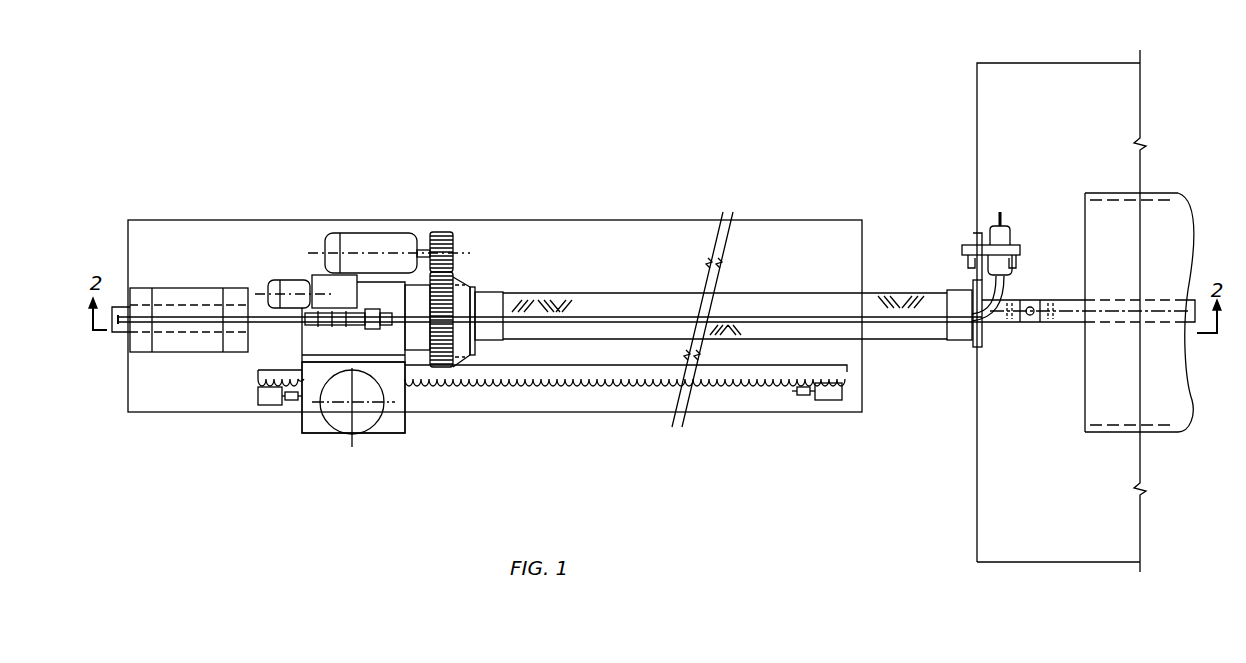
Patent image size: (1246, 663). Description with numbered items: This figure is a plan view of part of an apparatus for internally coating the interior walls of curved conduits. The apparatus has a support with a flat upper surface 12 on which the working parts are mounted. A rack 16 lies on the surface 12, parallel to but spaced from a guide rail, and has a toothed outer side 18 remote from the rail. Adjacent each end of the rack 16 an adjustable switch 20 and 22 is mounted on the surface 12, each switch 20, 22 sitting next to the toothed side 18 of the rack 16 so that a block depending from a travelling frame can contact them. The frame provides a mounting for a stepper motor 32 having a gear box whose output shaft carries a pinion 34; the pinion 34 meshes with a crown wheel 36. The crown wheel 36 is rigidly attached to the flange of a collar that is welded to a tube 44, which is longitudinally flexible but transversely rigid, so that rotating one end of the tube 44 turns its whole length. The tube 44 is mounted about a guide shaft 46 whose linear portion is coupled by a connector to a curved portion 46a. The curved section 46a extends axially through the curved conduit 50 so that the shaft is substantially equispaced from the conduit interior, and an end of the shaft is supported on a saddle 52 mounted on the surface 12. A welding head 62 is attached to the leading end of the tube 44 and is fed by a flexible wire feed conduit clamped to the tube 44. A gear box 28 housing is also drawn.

The flat upper surface 12 is at (627, 238).
The rack 16 is at (725, 373).
The toothed outer side 18 is at (552, 381).
The adjustable switch 20 is at (270, 405).
The adjustable switch 22 is at (828, 400).
The gear box 28 is at (390, 425).
The stepper motor 32 is at (355, 243).
The pinion 34 is at (432, 230).
The crown wheel 36 is at (447, 282).
The tube 44 is at (905, 292).
The guide shaft 46 is at (1005, 323).
The curved portion 46a is at (1060, 323).
The curved conduit 50 is at (1092, 200).
The saddle 52 is at (135, 292).
The welding head 62 is at (1020, 250).